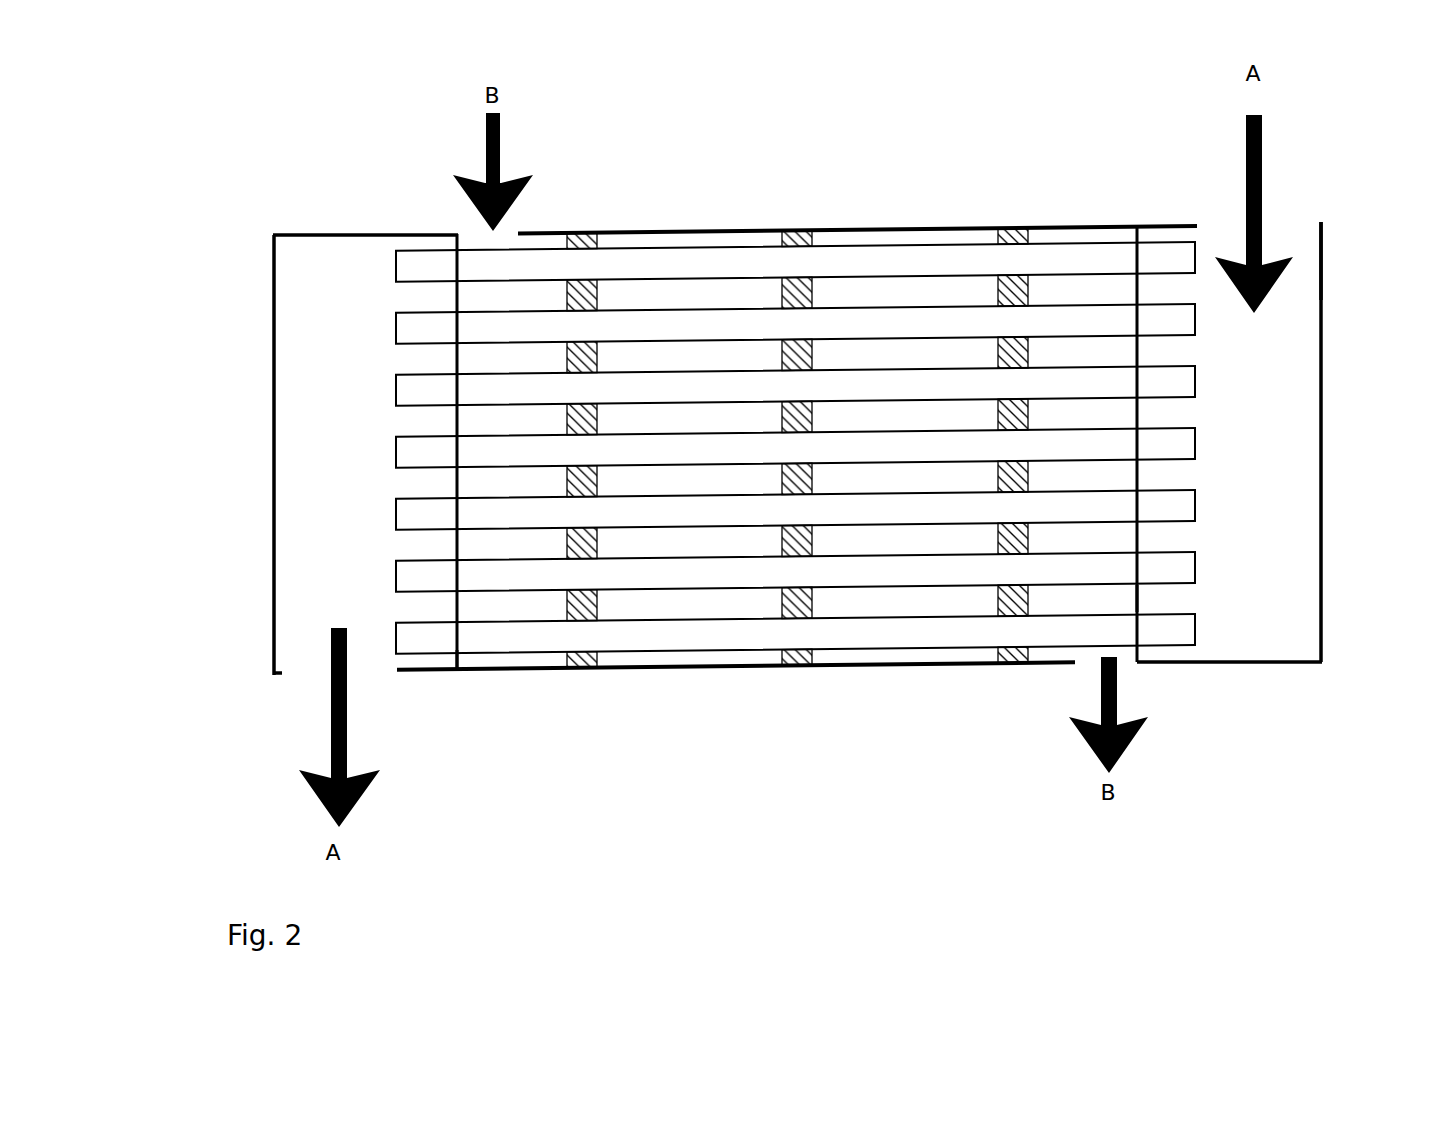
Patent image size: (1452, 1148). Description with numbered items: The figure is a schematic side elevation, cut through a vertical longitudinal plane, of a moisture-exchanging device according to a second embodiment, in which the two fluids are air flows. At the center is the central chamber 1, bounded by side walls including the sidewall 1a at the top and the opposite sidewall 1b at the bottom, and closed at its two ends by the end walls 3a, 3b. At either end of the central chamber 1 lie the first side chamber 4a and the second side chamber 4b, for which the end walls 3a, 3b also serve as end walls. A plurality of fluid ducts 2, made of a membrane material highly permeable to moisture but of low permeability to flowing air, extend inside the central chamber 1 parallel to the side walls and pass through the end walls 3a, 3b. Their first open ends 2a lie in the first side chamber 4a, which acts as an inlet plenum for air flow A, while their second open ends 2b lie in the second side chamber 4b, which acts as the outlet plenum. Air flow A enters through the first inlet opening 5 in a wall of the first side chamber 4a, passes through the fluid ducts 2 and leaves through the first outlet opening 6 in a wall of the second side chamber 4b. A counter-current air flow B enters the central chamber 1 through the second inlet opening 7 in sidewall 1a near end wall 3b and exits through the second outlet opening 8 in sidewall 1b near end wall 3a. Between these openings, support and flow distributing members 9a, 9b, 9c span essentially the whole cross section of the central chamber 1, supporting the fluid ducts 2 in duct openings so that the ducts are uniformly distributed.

The central chamber 1 is at (852, 657).
The sidewall 1a is at (702, 232).
The sidewall 1b is at (685, 669).
The fluid ducts 2 is at (897, 592).
The first open ends 2a is at (1196, 322).
The second open ends 2b is at (396, 332).
The end wall 3a is at (1140, 598).
The end wall 3b is at (466, 662).
The first side chamber 4a is at (1298, 478).
The second side chamber 4b is at (318, 500).
The first inlet opening 5 is at (1314, 226).
The first outlet opening 6 is at (279, 672).
The second inlet opening 7 is at (465, 238).
The second outlet opening 8 is at (1137, 662).
The support and flow distributing member 9a is at (598, 243).
The support and flow distributing member 9b is at (818, 238).
The support and flow distributing member 9c is at (1022, 240).